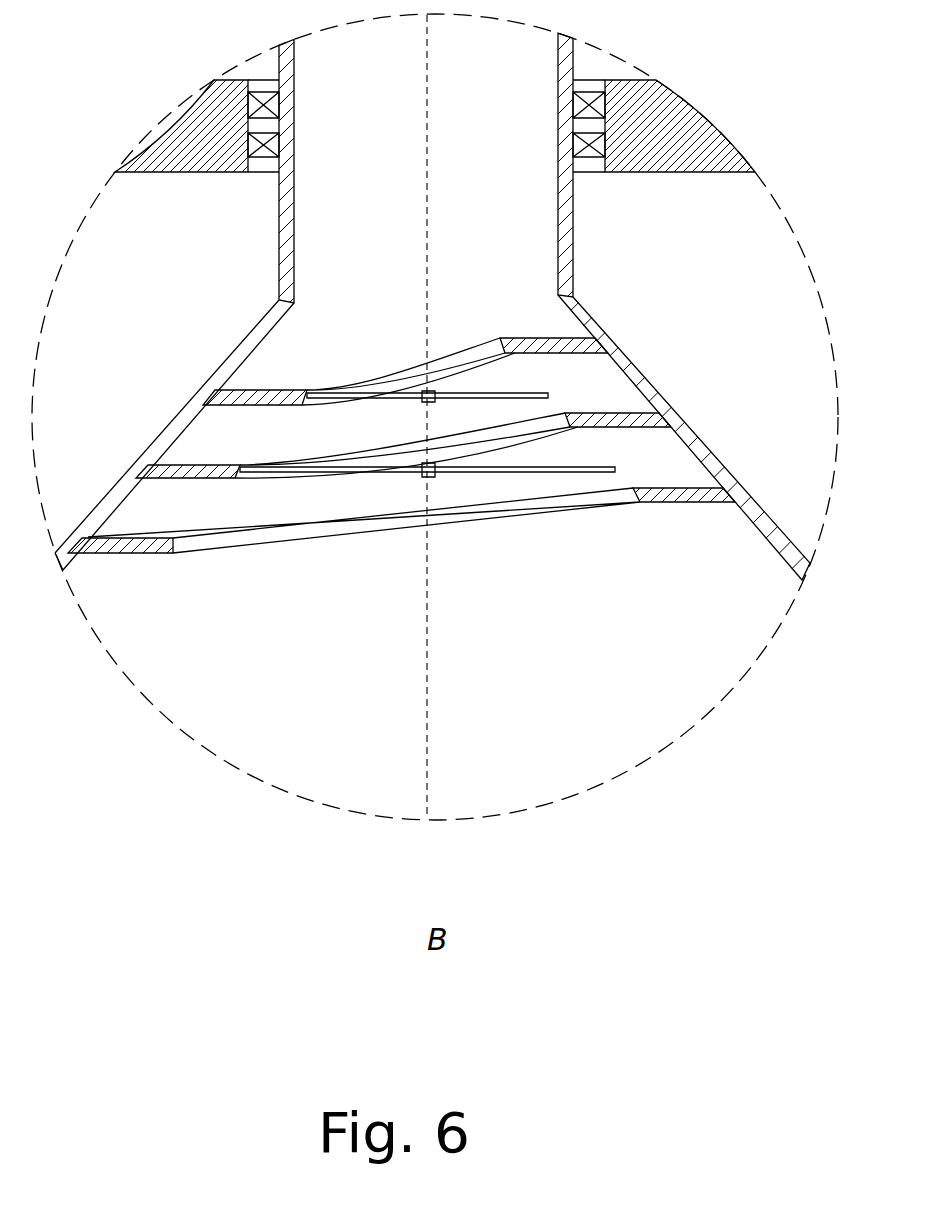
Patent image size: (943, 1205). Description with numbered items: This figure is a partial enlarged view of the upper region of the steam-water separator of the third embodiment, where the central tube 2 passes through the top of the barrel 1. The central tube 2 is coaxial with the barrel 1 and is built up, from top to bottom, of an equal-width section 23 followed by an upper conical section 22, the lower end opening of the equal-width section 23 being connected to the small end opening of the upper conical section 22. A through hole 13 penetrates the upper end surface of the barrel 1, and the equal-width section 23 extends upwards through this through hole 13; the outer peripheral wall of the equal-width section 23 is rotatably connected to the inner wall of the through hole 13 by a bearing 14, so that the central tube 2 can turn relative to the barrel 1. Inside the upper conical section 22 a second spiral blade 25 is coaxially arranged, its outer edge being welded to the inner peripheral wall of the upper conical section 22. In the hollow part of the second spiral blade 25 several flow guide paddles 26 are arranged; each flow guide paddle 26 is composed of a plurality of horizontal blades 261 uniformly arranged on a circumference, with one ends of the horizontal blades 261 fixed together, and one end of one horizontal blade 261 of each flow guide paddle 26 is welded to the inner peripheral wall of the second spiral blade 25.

The barrel 1 is at (708, 142).
The through hole 13 is at (607, 127).
The bearing 14 is at (248, 102).
The equal-width section 23 is at (573, 67).
The central tube 2 is at (733, 455).
The upper conical section 22 is at (712, 447).
The second spiral blade 25 is at (137, 547).
The horizontal blade 261 is at (340, 467).
The flow guide paddle 26 is at (433, 477).